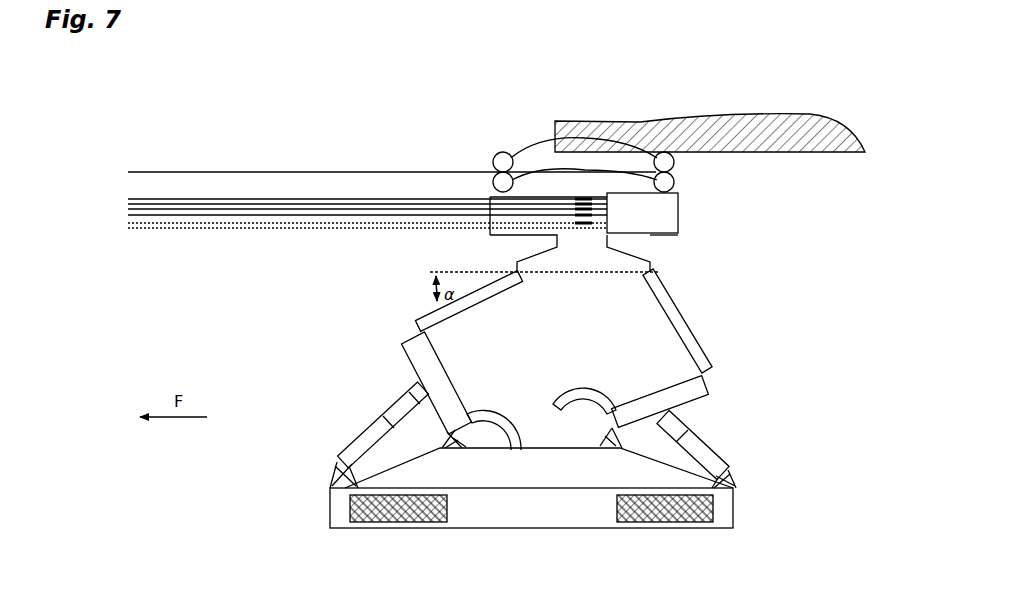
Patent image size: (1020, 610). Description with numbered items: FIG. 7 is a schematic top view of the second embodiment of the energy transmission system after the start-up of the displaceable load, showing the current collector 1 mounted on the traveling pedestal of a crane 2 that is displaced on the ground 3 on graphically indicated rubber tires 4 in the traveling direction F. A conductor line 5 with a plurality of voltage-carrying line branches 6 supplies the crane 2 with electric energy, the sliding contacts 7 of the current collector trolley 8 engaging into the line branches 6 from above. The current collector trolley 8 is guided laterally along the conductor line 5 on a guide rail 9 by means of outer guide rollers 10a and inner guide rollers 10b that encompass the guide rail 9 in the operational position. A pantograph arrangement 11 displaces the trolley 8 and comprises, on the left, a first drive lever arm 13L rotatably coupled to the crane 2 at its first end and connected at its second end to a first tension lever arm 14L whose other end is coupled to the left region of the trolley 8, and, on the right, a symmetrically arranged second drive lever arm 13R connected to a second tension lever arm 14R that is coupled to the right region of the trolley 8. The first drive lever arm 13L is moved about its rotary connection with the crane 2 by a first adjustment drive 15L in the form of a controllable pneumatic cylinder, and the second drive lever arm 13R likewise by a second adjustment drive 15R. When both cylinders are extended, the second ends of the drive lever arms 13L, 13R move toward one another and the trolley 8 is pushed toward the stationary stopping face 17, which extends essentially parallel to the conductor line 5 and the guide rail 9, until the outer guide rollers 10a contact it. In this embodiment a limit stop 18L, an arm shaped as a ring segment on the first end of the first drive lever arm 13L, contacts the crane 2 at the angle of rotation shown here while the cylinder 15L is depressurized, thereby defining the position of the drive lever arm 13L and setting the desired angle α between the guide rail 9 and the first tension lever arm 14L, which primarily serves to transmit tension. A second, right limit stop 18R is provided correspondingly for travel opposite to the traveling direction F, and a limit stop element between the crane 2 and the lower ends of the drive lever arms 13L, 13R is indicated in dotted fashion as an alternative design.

The current collector 1 is at (780, 332).
The crane 2 is at (536, 509).
The ground 3 is at (837, 466).
The rubber tires 4 is at (330, 509).
The conductor line 5 is at (224, 148).
The line branches 6 is at (296, 231).
The sliding contacts 7 is at (585, 230).
The current collector trolley 8 is at (678, 214).
The guide rail 9 is at (336, 171).
The outer guide rollers 10a is at (583, 152).
The inner guide rollers 10b is at (583, 180).
The pantograph arrangement 11 is at (696, 341).
The first drive lever arm 13L is at (410, 336).
The second drive lever arm 13R is at (712, 388).
The first tension lever arm 14L is at (428, 320).
The second tension lever arm 14R is at (682, 314).
The first adjustment drive 15L is at (343, 462).
The second adjustment drive 15R is at (724, 468).
The stopping face 17 is at (862, 152).
The limit stop 18L is at (488, 410).
The second limit stop 18R is at (575, 388).